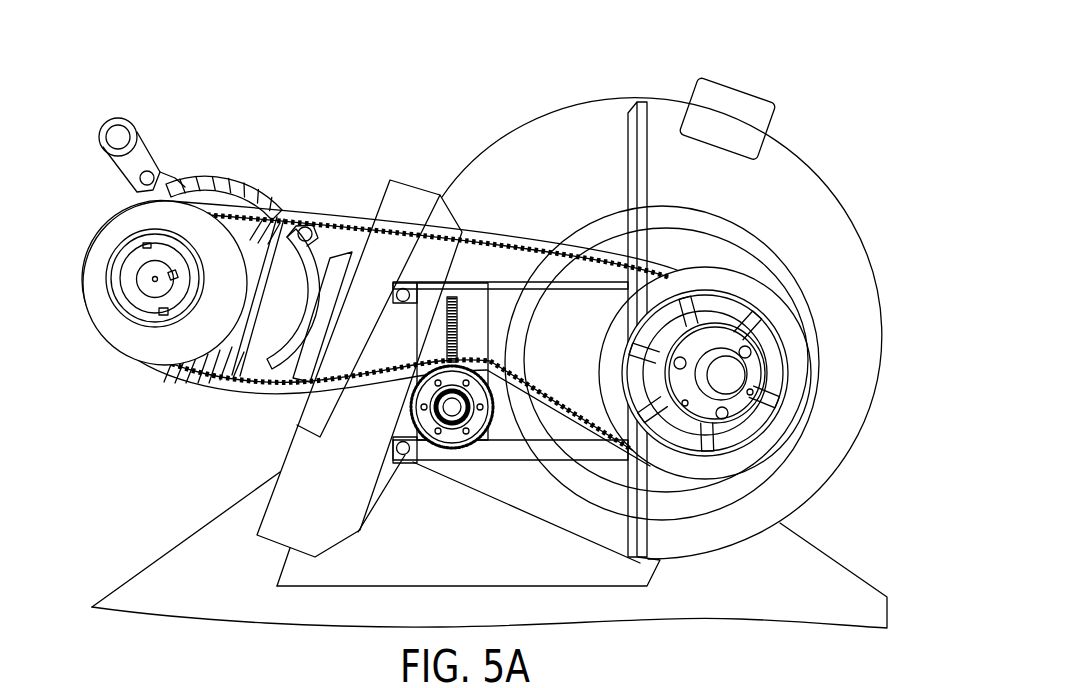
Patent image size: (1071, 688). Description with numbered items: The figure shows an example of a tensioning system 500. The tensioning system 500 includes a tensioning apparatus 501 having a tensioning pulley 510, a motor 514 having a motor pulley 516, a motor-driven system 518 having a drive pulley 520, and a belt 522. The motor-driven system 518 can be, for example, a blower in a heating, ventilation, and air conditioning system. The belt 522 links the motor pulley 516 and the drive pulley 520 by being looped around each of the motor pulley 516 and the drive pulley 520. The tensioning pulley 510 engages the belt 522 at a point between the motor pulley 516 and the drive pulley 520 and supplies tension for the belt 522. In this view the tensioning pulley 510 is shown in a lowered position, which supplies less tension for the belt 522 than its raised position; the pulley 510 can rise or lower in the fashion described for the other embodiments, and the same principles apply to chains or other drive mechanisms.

The tensioning system 500 is at (118, 74).
The tensioning apparatus 501 is at (472, 300).
The tensioning pulley 510 is at (445, 437).
The motor 514 is at (143, 193).
The motor pulley 516 is at (108, 297).
The motor-driven system 518 is at (843, 256).
The drive pulley 520 is at (785, 329).
The belt 522 is at (228, 392).